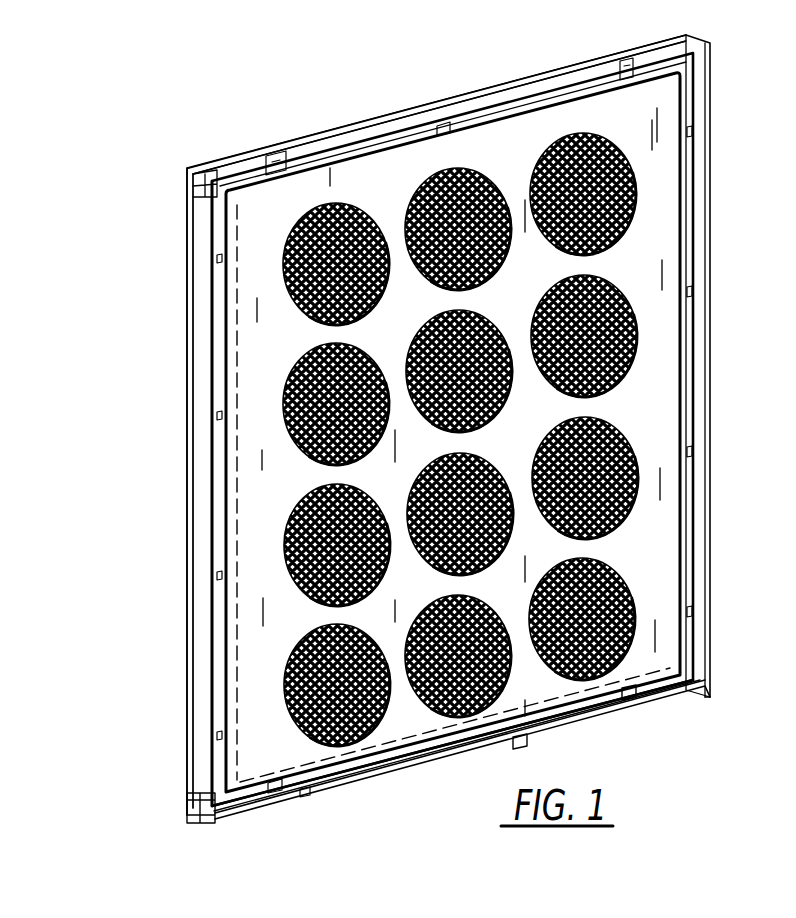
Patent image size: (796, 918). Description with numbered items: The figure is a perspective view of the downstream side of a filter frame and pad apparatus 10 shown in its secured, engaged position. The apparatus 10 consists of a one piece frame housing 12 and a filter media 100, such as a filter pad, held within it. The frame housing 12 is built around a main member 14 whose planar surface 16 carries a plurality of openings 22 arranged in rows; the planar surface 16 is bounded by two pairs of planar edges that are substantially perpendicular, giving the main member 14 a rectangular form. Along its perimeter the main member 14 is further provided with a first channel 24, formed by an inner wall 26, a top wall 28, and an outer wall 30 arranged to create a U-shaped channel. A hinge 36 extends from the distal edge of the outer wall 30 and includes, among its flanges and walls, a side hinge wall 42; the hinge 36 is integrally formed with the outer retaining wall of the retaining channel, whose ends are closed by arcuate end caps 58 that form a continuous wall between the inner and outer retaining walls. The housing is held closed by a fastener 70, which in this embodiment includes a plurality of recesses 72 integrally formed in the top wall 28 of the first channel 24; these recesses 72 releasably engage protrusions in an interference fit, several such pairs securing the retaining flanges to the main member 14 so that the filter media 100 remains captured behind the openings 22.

The filter frame and pad apparatus 10 is at (249, 108).
The frame housing 12 is at (182, 236).
The main member 14 is at (504, 139).
The planar surface 16 is at (583, 113).
The openings 22 is at (440, 178).
The first channel 24 is at (228, 808).
The inner wall 26 is at (232, 768).
The top wall 28 is at (328, 777).
The outer wall 30 is at (398, 773).
The hinge 36 is at (182, 388).
The side hinge wall 42 is at (207, 497).
The end caps 58 is at (187, 812).
The fastener 70 is at (608, 703).
The recesses 72 is at (631, 696).
The filter media 100 is at (612, 187).